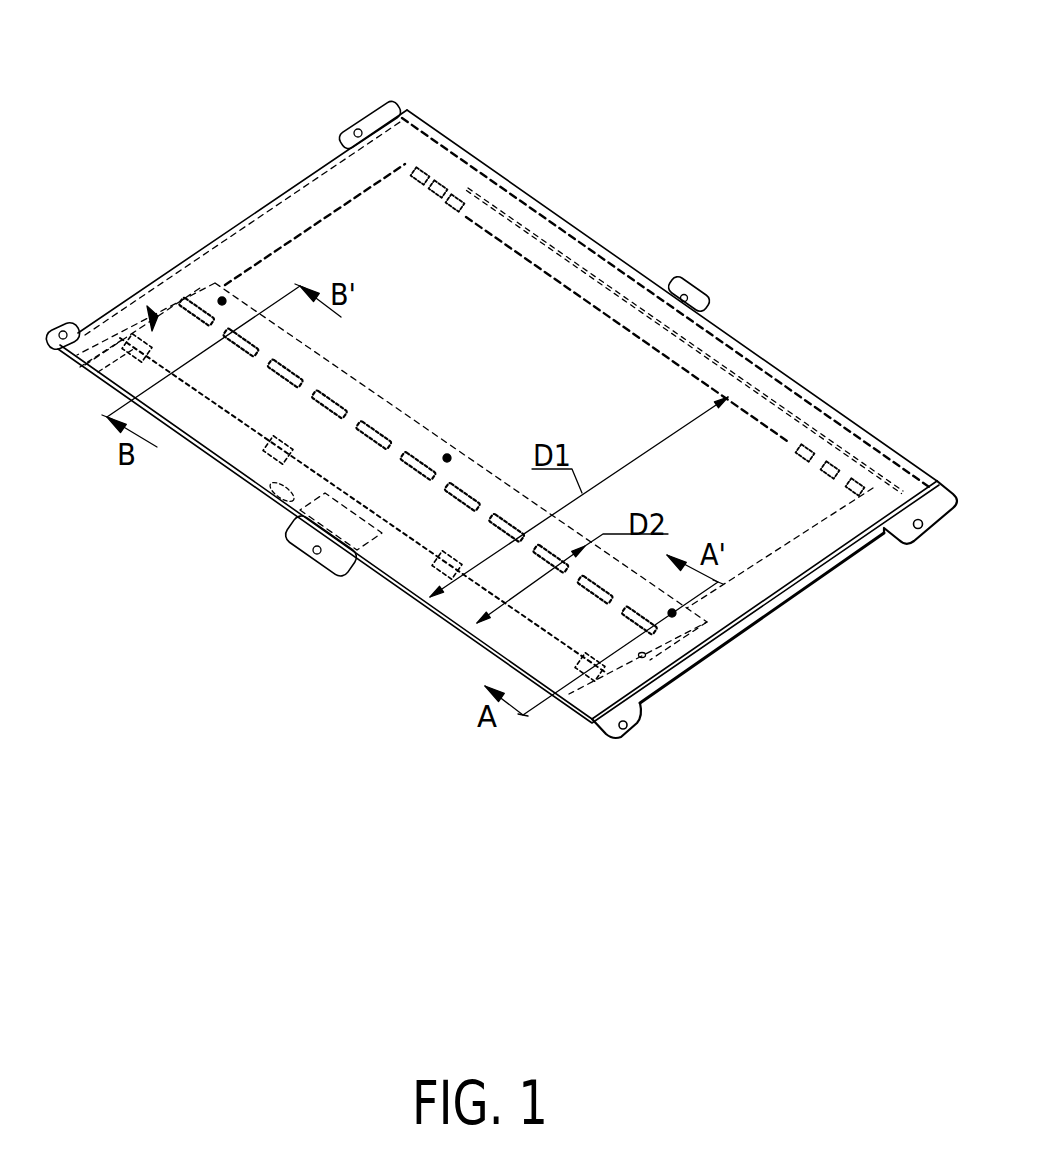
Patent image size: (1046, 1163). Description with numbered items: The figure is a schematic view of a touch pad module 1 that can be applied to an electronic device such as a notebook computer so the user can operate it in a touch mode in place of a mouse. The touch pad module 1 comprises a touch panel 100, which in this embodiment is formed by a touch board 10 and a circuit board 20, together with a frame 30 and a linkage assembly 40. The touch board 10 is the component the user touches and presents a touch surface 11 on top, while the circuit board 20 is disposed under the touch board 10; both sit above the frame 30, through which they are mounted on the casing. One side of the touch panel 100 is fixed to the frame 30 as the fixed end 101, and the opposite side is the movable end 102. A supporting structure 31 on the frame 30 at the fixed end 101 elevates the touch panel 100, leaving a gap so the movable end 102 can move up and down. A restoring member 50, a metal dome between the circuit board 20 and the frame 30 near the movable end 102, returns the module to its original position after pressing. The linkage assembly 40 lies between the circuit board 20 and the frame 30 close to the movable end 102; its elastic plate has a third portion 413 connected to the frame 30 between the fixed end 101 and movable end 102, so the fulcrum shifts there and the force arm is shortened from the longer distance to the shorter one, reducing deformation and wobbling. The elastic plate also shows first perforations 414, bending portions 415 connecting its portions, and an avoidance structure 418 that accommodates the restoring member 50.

The touch pad module 1 is at (232, 78).
The touch board 10 is at (322, 185).
The touch panel 100 is at (377, 143).
The fixed end 101 is at (618, 258).
The movable end 102 is at (373, 574).
The touch surface 11 is at (776, 414).
The circuit board 20 is at (862, 538).
The frame 30 is at (743, 623).
The supporting structure 31 is at (490, 182).
The linkage assembly 40 is at (140, 297).
The third portion 413 is at (210, 288).
The first perforation 414 is at (93, 358).
The bending portion 415 is at (180, 285).
The avoidance structure 418 is at (270, 486).
The restoring member 50 is at (300, 512).